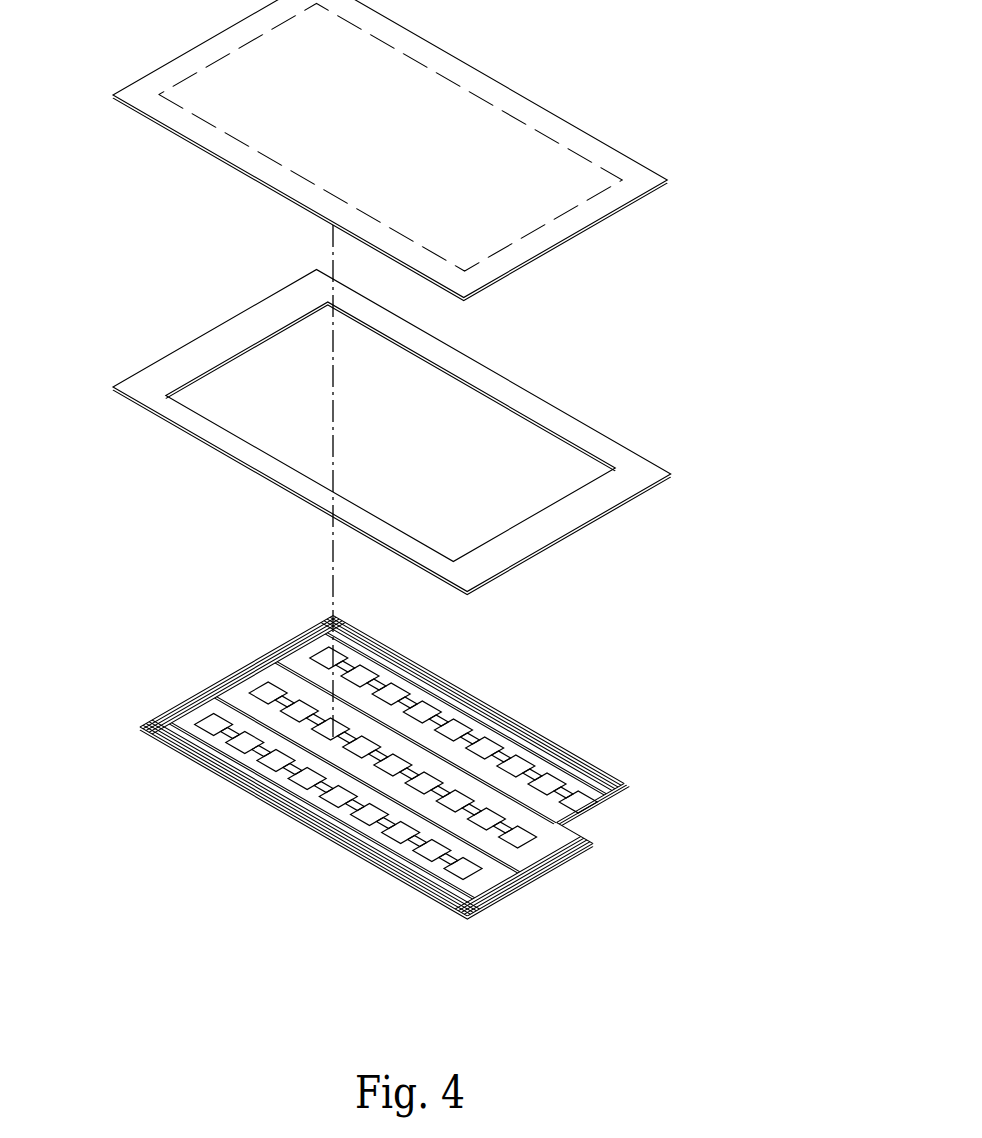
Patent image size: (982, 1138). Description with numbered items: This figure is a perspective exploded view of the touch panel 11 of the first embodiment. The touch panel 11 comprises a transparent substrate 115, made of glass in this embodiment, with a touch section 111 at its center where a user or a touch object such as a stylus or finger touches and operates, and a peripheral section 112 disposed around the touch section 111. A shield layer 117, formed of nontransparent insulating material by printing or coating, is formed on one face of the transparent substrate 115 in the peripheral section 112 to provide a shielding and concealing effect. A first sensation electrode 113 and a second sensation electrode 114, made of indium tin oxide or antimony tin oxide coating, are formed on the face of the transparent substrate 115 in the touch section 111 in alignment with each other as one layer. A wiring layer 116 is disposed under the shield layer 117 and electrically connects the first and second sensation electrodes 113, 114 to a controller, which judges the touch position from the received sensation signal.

The touch panel 11 is at (707, 298).
The touch section 111 is at (468, 97).
The peripheral section 112 is at (612, 148).
The transparent substrate 115 is at (670, 181).
The shield layer 117 is at (588, 434).
The first sensation electrode 113 is at (277, 692).
The second sensation electrode 114 is at (238, 753).
The wiring layer 116 is at (147, 726).